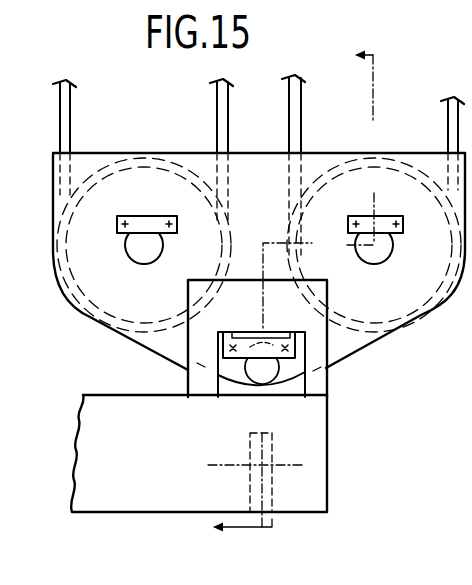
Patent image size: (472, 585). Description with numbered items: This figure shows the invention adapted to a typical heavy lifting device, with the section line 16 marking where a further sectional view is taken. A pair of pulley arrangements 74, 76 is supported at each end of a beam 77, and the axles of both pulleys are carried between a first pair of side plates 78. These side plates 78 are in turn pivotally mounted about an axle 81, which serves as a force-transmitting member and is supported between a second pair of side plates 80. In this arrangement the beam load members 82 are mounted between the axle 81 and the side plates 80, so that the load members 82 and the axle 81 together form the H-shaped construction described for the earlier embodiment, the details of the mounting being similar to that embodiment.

The section line 16- 16 is at (277, 292).
The pulley arrangement 74 is at (407, 171).
The pulley arrangement 76 is at (152, 160).
The beam 77 is at (328, 421).
The first pair of side plates 78 is at (254, 160).
The second pair of side plates 80 is at (200, 333).
The axle 81 is at (258, 373).
The beam load members 82 is at (263, 332).